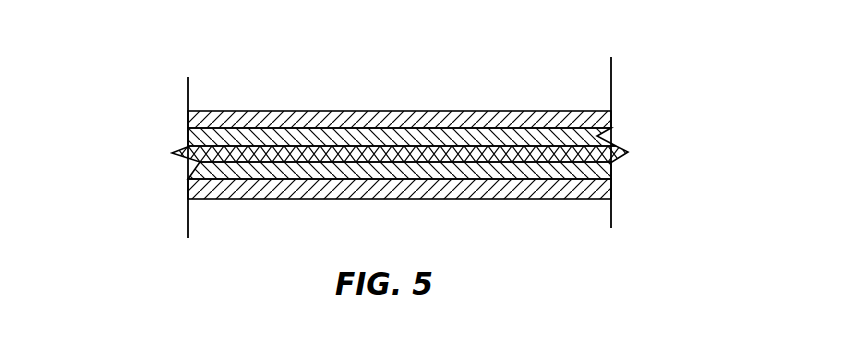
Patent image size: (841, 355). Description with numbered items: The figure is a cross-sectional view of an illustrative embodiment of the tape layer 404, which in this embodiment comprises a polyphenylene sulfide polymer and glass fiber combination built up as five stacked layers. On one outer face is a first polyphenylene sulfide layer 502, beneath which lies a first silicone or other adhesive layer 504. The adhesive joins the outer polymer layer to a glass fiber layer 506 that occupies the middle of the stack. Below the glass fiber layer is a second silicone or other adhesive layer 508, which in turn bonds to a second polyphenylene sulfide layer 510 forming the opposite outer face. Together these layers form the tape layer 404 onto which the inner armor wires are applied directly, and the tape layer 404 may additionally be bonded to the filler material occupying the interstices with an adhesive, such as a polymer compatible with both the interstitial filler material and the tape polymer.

The tape layer 404 is at (492, 91).
The first polyphenylene sulfide layer 502 is at (603, 118).
The first silicone or other adhesive layer 504 is at (190, 133).
The glass fiber layer 506 is at (630, 156).
The second silicone or other adhesive layer 508 is at (215, 172).
The second polyphenylene sulfide layer 510 is at (603, 184).